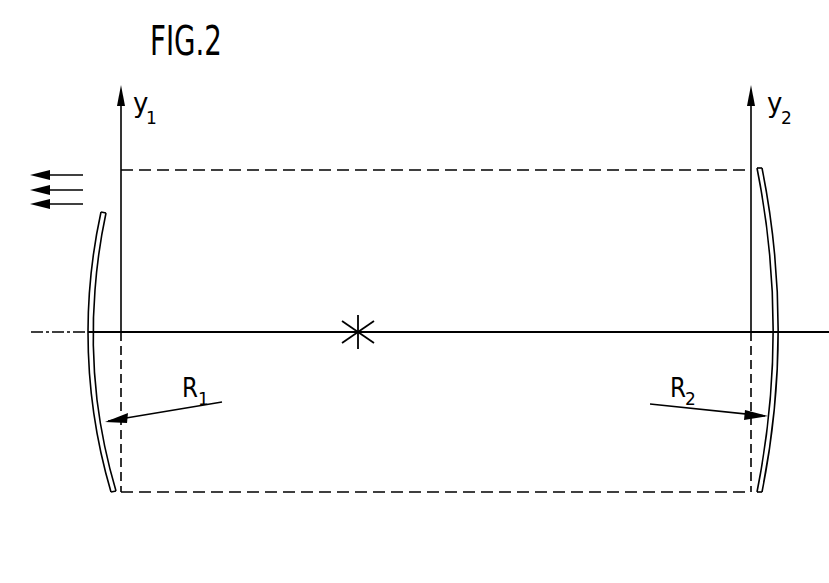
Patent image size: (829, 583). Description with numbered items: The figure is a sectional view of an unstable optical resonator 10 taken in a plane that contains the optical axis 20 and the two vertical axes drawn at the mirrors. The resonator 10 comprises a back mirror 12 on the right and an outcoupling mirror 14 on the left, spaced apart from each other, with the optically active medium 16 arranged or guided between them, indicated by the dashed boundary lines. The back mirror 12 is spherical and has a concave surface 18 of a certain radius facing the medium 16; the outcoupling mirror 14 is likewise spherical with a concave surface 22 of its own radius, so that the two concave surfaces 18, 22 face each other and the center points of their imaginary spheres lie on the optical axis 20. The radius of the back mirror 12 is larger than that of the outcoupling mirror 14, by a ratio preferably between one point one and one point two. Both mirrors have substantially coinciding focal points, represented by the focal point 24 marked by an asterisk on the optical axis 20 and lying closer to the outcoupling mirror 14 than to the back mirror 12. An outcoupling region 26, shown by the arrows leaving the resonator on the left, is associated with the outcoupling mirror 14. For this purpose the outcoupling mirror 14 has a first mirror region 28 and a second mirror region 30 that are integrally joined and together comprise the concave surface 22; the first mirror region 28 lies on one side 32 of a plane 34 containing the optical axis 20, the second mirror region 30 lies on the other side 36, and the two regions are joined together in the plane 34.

The unstable optical resonator 10 is at (472, 132).
The back mirror 12 is at (767, 465).
The outcoupling mirror 14 is at (104, 478).
The optically active medium 16 is at (279, 170).
The concave surface 18 is at (768, 237).
The optical axis 20 is at (510, 334).
The concave surface 22 is at (95, 358).
The focal point 24 is at (358, 318).
The outcoupling region 26 is at (101, 180).
The first mirror region 28 is at (103, 447).
The second mirror region 30 is at (100, 243).
The one side 32 is at (72, 453).
The plane 34 is at (62, 333).
The other side 36 is at (72, 284).